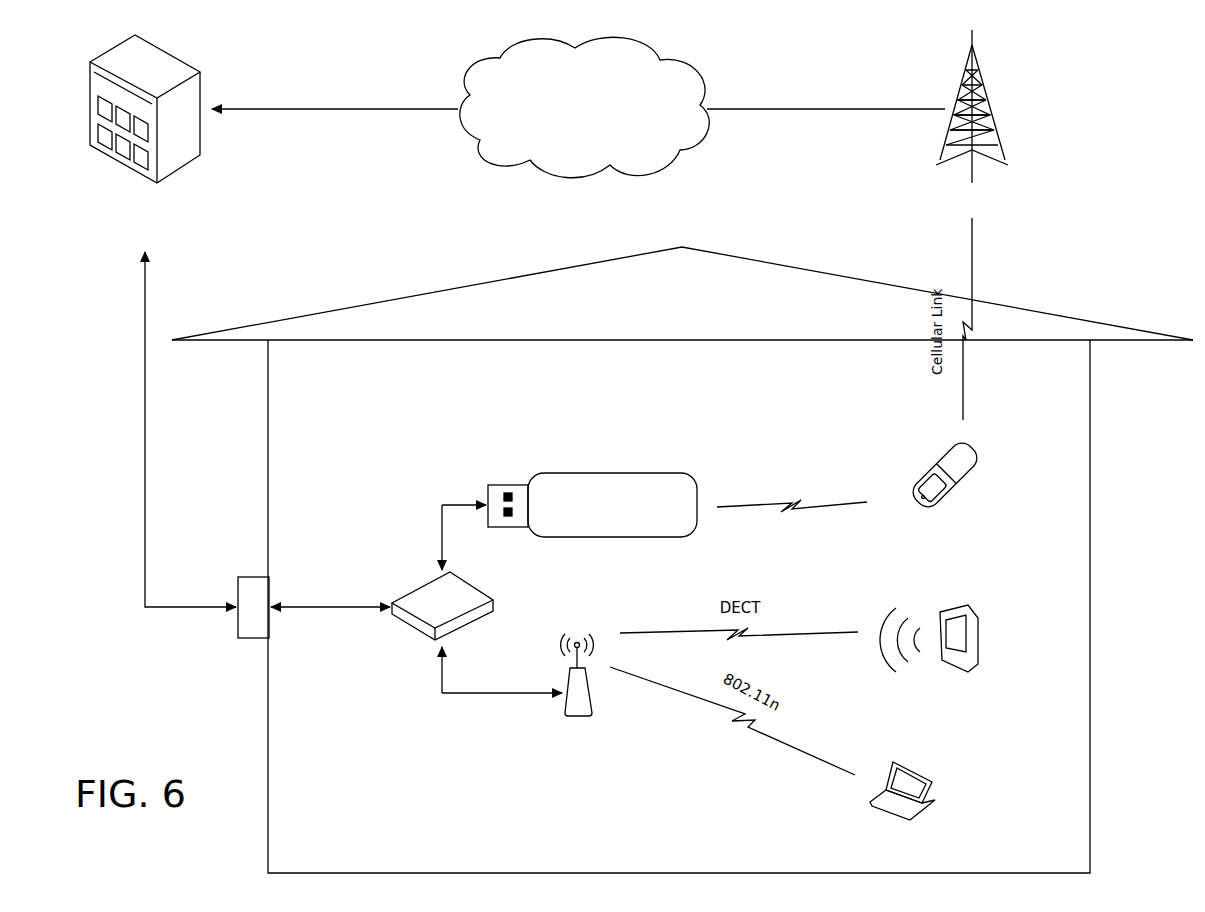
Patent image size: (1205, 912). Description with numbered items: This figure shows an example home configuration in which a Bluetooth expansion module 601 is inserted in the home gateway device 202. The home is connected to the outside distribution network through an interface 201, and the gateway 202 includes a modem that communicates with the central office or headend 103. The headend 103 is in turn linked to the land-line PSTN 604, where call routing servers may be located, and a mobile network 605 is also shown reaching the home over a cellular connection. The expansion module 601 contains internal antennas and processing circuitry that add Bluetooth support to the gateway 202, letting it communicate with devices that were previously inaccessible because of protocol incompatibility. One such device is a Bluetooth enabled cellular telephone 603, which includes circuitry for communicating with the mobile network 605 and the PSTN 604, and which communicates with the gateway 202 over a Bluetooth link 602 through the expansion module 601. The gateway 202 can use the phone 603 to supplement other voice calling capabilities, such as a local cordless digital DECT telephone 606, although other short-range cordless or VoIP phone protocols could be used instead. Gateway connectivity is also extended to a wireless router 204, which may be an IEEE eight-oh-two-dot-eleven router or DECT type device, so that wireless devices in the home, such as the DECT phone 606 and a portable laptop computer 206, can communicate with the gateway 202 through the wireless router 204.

The headend 103 is at (145, 134).
The PSTN 604 is at (585, 107).
The mobile network 605 is at (972, 121).
The interface 201 is at (238, 577).
The gateway device 202 is at (415, 648).
The Bluetooth expansion module 601 is at (592, 505).
The Bluetooth link 602 is at (792, 477).
The Bluetooth enabled cellular telephone 603 is at (945, 497).
The DECT telephone 606 is at (935, 666).
The wireless router 204 is at (562, 718).
The portable laptop computer 206 is at (902, 815).